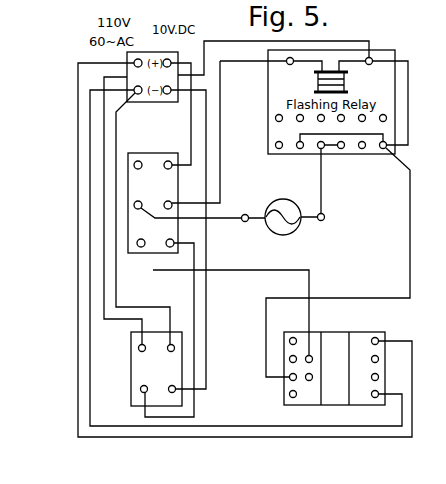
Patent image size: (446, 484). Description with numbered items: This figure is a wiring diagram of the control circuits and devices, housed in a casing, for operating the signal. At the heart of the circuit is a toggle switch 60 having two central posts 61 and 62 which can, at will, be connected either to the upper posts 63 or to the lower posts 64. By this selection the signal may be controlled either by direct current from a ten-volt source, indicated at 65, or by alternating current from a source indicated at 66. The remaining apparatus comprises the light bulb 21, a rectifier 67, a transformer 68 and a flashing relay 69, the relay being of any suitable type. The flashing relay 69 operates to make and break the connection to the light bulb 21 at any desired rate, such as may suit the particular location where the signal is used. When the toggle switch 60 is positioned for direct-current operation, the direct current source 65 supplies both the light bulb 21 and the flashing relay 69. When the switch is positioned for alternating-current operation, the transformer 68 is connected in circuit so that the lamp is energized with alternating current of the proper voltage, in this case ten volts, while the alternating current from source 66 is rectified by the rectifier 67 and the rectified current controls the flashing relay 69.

The light bulb 21 is at (287, 201).
The toggle switch 60 is at (180, 232).
The central post 61 is at (134, 204).
The central post 62 is at (172, 203).
The upper posts 63 is at (167, 161).
The lower posts 64 is at (170, 247).
The direct current source 65 is at (170, 87).
The alternating current source 66 is at (135, 88).
The rectifier 67 is at (131, 373).
The transformer 68 is at (347, 332).
The flashing relay 69 is at (346, 82).